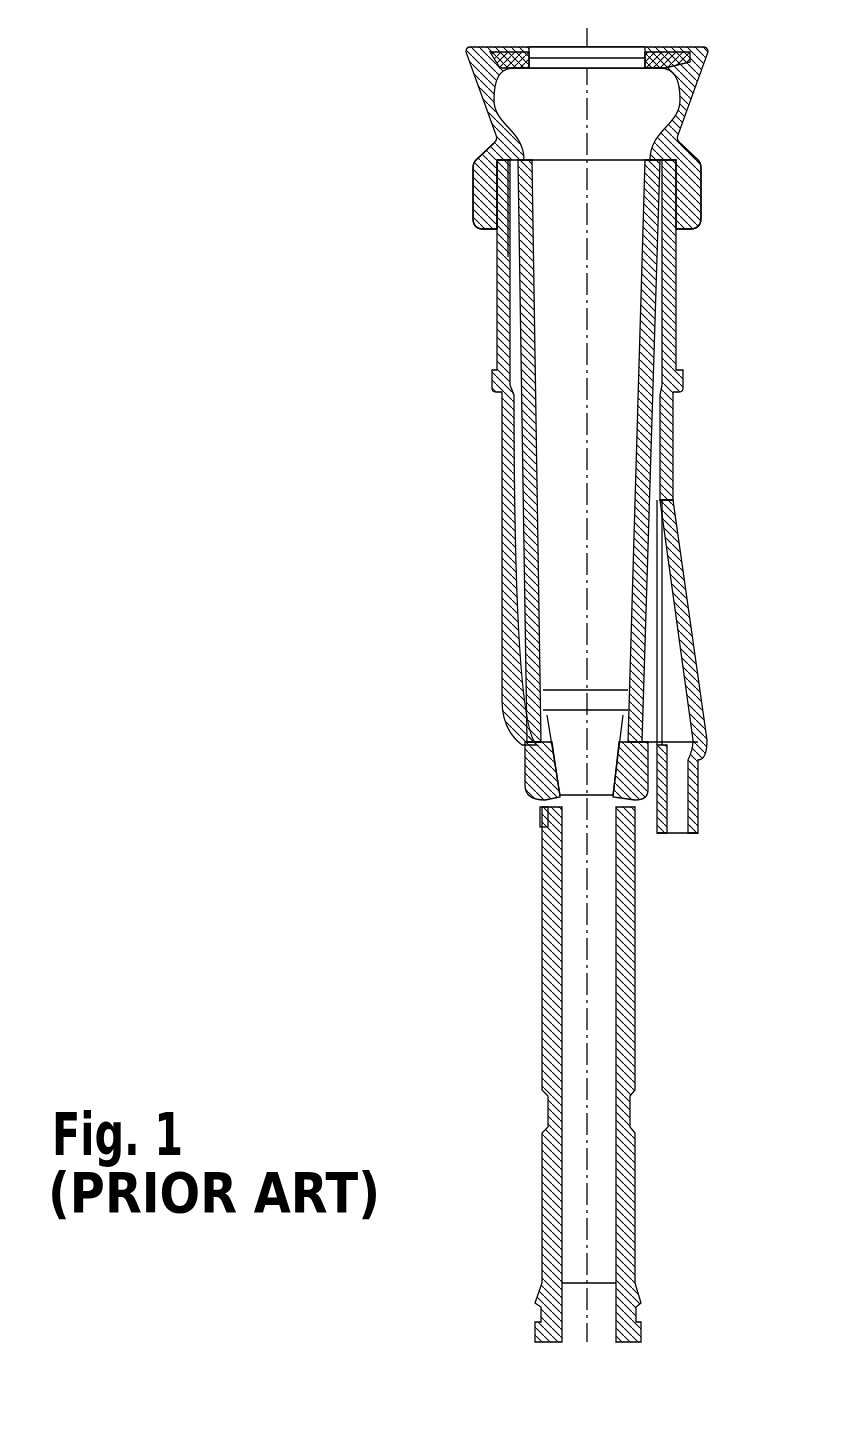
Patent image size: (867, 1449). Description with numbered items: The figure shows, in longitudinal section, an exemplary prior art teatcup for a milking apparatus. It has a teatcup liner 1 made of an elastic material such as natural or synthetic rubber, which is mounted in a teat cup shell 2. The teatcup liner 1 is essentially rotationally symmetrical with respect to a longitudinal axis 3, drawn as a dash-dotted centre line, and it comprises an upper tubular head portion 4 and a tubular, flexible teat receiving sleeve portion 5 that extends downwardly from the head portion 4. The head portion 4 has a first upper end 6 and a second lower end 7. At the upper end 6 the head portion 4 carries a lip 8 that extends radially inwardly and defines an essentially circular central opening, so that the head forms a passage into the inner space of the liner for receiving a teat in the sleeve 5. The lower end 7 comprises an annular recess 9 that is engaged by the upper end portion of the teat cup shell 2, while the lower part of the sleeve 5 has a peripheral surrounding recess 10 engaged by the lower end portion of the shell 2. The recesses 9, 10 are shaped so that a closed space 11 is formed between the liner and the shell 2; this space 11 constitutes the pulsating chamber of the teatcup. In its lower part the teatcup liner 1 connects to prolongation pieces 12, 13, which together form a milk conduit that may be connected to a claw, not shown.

The teatcup liner 1 is at (652, 440).
The teat cup shell 2 is at (675, 530).
The longitudinal axis 3 is at (587, 555).
The upper tubular head portion 4 is at (697, 107).
The teat receiving sleeve portion 5 is at (648, 348).
The first upper end 6 is at (710, 58).
The second lower end 7 is at (700, 220).
The lip 8 is at (612, 48).
The annular recess 9 is at (476, 228).
The peripheral surrounding recess 10 is at (533, 753).
The closed space 11 is at (523, 578).
The prolongation piece 12 is at (556, 817).
The prolongation piece 13 is at (548, 1074).